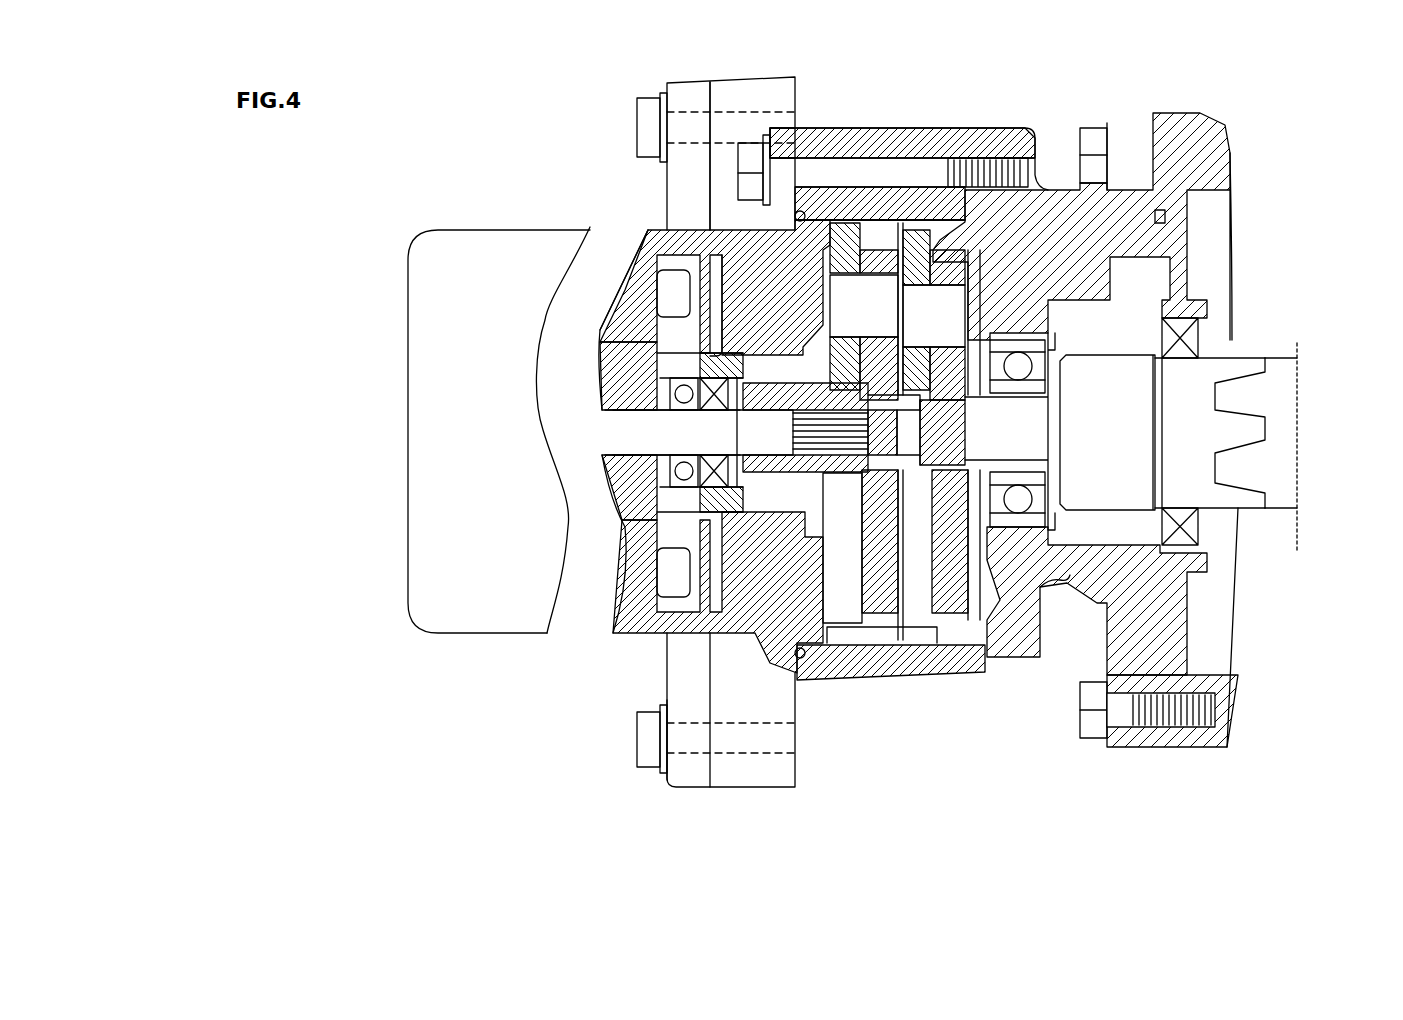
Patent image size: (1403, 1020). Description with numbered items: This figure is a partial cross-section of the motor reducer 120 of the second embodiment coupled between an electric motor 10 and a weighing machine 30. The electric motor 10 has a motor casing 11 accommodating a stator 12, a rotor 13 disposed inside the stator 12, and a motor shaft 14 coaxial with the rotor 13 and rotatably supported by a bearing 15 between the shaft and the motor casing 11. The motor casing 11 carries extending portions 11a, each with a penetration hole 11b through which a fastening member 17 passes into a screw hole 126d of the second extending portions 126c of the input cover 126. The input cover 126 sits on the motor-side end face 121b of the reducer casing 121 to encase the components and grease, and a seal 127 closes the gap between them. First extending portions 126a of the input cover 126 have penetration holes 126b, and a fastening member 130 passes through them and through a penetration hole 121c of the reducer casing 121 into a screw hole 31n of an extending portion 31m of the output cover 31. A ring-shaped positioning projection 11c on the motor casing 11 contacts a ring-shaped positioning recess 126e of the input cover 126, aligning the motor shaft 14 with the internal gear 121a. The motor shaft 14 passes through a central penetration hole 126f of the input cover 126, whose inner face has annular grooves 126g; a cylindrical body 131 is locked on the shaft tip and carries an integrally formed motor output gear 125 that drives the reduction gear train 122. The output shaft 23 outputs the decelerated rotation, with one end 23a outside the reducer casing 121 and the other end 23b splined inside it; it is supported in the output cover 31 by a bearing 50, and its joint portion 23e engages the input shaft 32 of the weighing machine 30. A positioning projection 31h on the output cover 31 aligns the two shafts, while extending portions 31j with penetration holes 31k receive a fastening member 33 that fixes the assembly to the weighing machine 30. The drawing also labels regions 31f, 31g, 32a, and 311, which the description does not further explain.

The electric motor 10 is at (507, 422).
The motor casing 11 is at (680, 412).
The extending portions 11a is at (693, 768).
The penetration hole 11b is at (778, 786).
The positioning projection 11c is at (738, 300).
The stator 12 is at (620, 338).
The rotor 13 is at (600, 360).
The motor shaft 14 is at (607, 430).
The bearing 15 is at (642, 268).
The fastening member 17 is at (655, 112).
The output shaft 23 is at (1143, 397).
The one end 23a is at (1143, 460).
The other end 23b is at (1010, 635).
The joint portion 23e is at (1253, 382).
The weighing machine 30 is at (1245, 712).
The output cover 31 is at (1125, 432).
The housing lower flange 31f is at (980, 670).
The housing lower wall 31g is at (967, 693).
The positioning projection 31h is at (1182, 255).
The extending portions 31j is at (1107, 745).
The penetration hole 31k is at (1117, 717).
The extending portion 31m is at (997, 140).
The screw hole 31n is at (1045, 170).
The input shaft 32 is at (1244, 424).
The pulley groove portion 32a is at (1250, 380).
The fastening member 33 is at (1220, 702).
The bearing 50 is at (1048, 585).
The motor reducer 120 is at (880, 600).
The reducer casing 121 is at (909, 418).
The internal gear 121a is at (900, 677).
The motor-side end face 121b is at (848, 210).
The penetration hole 121c is at (950, 165).
The reduction gear train 122 is at (908, 118).
The motor output gear 125 is at (875, 680).
The input cover 126 is at (766, 438).
The first extending portions 126a is at (785, 135).
The penetration hole 126b is at (755, 170).
The second extending portions 126c is at (782, 787).
The screw hole 126d is at (767, 743).
The positioning recess 126e is at (660, 633).
The penetration hole 126f is at (835, 548).
The annular grooves 126g is at (803, 648).
The seal 127 is at (745, 186).
The fastening member 130 is at (740, 183).
The cylindrical body 131 is at (903, 630).
The housing mounting flange 311 is at (1225, 730).